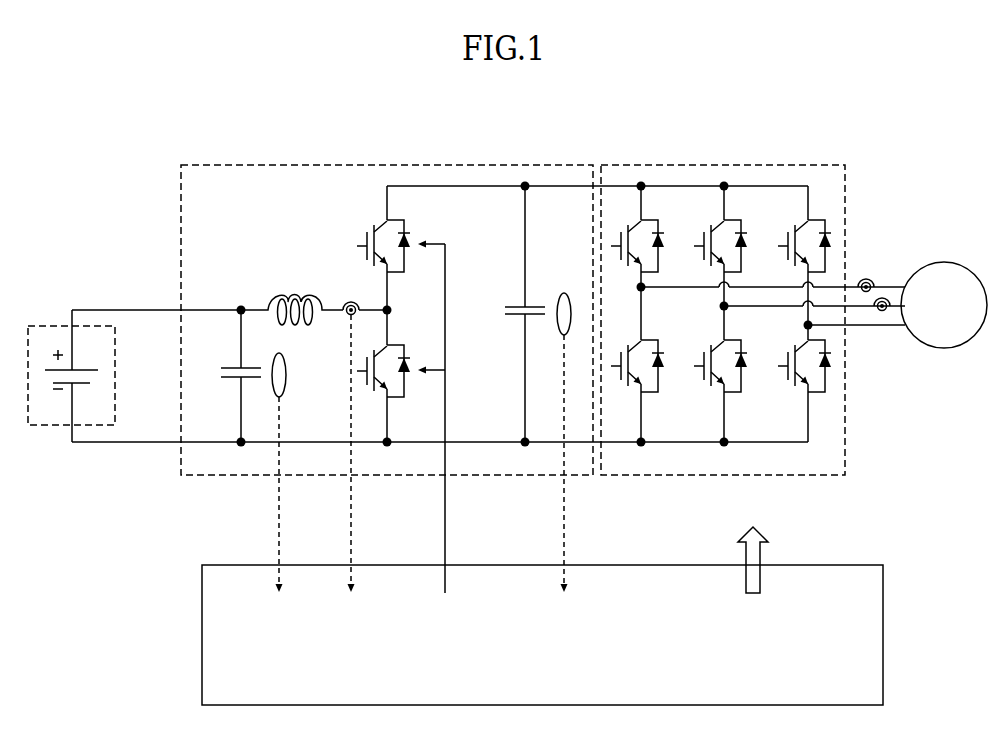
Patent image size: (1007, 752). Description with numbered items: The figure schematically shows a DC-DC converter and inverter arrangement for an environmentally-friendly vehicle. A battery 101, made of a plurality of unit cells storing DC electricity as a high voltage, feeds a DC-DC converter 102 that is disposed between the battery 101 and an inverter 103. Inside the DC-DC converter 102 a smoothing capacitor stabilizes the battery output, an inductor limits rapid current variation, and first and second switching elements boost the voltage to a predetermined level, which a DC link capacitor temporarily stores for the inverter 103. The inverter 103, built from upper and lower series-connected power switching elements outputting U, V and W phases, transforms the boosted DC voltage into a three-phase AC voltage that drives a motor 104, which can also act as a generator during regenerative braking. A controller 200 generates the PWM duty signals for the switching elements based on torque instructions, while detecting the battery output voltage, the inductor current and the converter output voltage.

The battery 101 is at (45, 326).
The DC-DC converter 102 is at (385, 164).
The inverter 103 is at (720, 164).
The motor 104 is at (943, 262).
The controller 200 is at (822, 565).